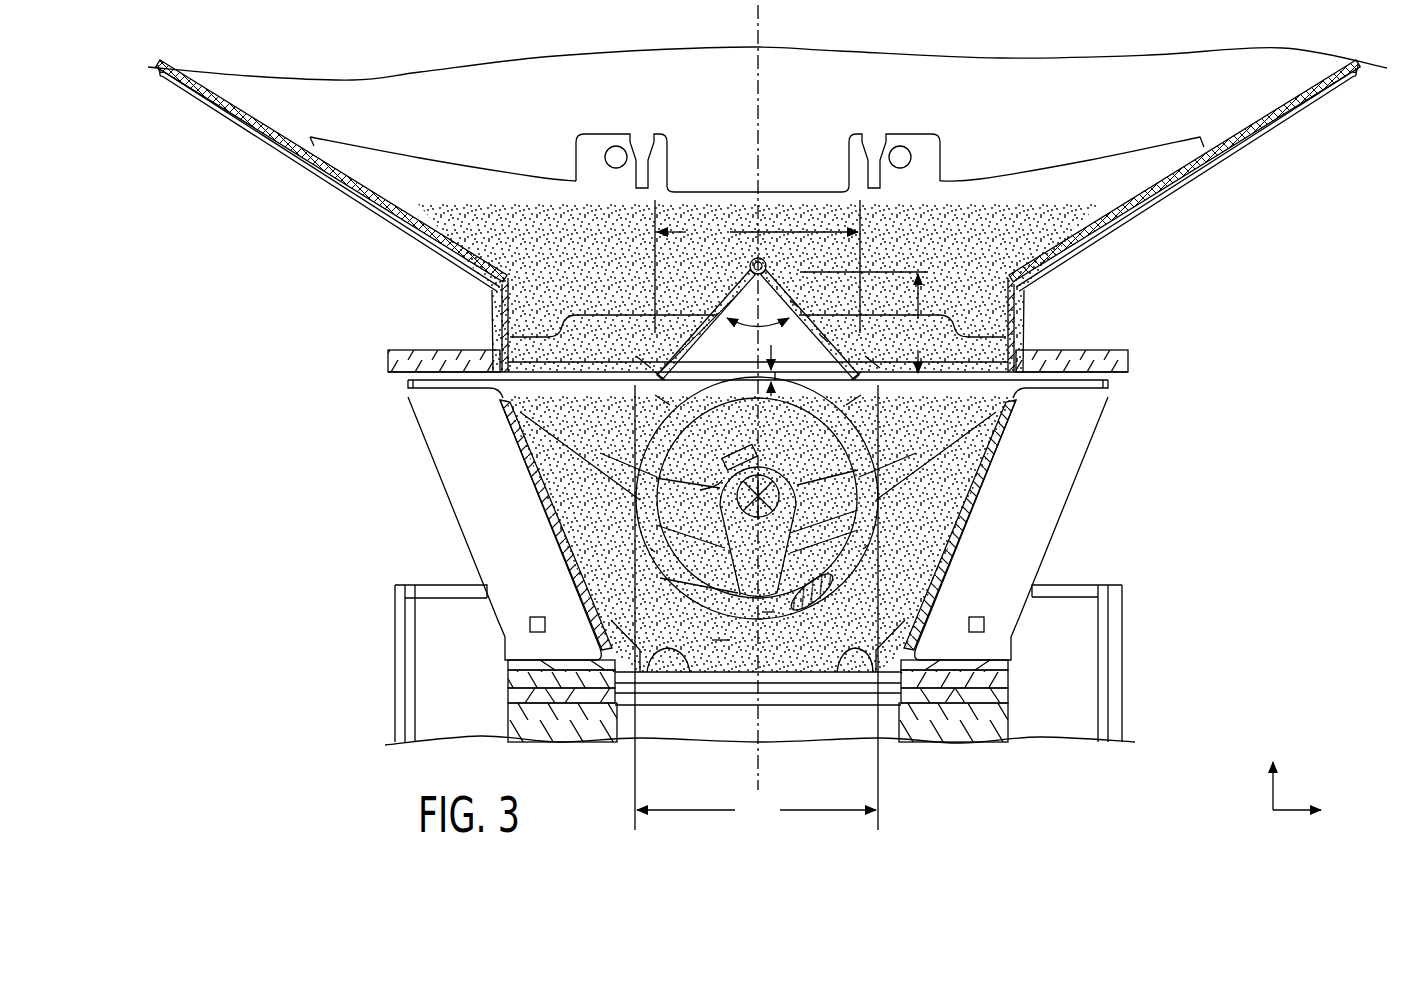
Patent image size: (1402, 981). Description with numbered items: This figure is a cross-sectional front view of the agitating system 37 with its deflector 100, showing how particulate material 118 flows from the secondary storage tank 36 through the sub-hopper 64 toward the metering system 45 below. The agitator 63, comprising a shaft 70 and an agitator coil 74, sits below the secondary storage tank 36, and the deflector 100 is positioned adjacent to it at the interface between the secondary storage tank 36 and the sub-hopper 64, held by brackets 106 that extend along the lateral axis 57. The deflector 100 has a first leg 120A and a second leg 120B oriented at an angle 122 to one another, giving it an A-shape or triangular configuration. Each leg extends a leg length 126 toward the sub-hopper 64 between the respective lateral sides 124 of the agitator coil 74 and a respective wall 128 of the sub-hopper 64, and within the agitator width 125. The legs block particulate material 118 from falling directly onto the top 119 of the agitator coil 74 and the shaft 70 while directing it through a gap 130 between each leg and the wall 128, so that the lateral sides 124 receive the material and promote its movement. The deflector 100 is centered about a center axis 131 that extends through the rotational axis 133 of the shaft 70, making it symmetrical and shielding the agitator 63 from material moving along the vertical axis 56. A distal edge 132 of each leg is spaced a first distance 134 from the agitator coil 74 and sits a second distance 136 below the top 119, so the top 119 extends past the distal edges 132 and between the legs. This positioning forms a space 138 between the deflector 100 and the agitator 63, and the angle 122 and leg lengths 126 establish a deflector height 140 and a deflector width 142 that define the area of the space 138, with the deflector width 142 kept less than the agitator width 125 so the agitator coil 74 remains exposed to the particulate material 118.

The secondary storage tank 36 is at (1222, 110).
The agitating system 37 is at (1252, 308).
The metering system 45 is at (1197, 625).
The vertical axis 56 is at (1273, 790).
The lateral axis 57 is at (1290, 810).
The agitator 63 is at (720, 625).
The sub-hopper 64 is at (1125, 372).
The shaft 70 is at (862, 500).
The agitator coil 74 is at (768, 612).
The deflector 100 is at (760, 262).
The bracket 106 is at (348, 152).
The particulate material 118 is at (758, 456).
The top of the agitator coil 119 is at (744, 390).
The first leg 120A is at (848, 372).
The second leg 120B is at (706, 368).
The angle 122 is at (758, 262).
The lateral sides 124 is at (652, 548).
The agitator width 125 is at (756, 607).
The leg length 126 is at (645, 362).
The wall 128 is at (512, 497).
The gap 130 is at (540, 400).
The center axis 131 is at (762, 110).
The distal edge 132 is at (662, 373).
The rotational axis 133 is at (705, 492).
The first distance 134 is at (668, 395).
The second distance 136 is at (785, 395).
The space 138 is at (753, 338).
The deflector height 140 is at (868, 322).
The deflector width 142 is at (757, 266).